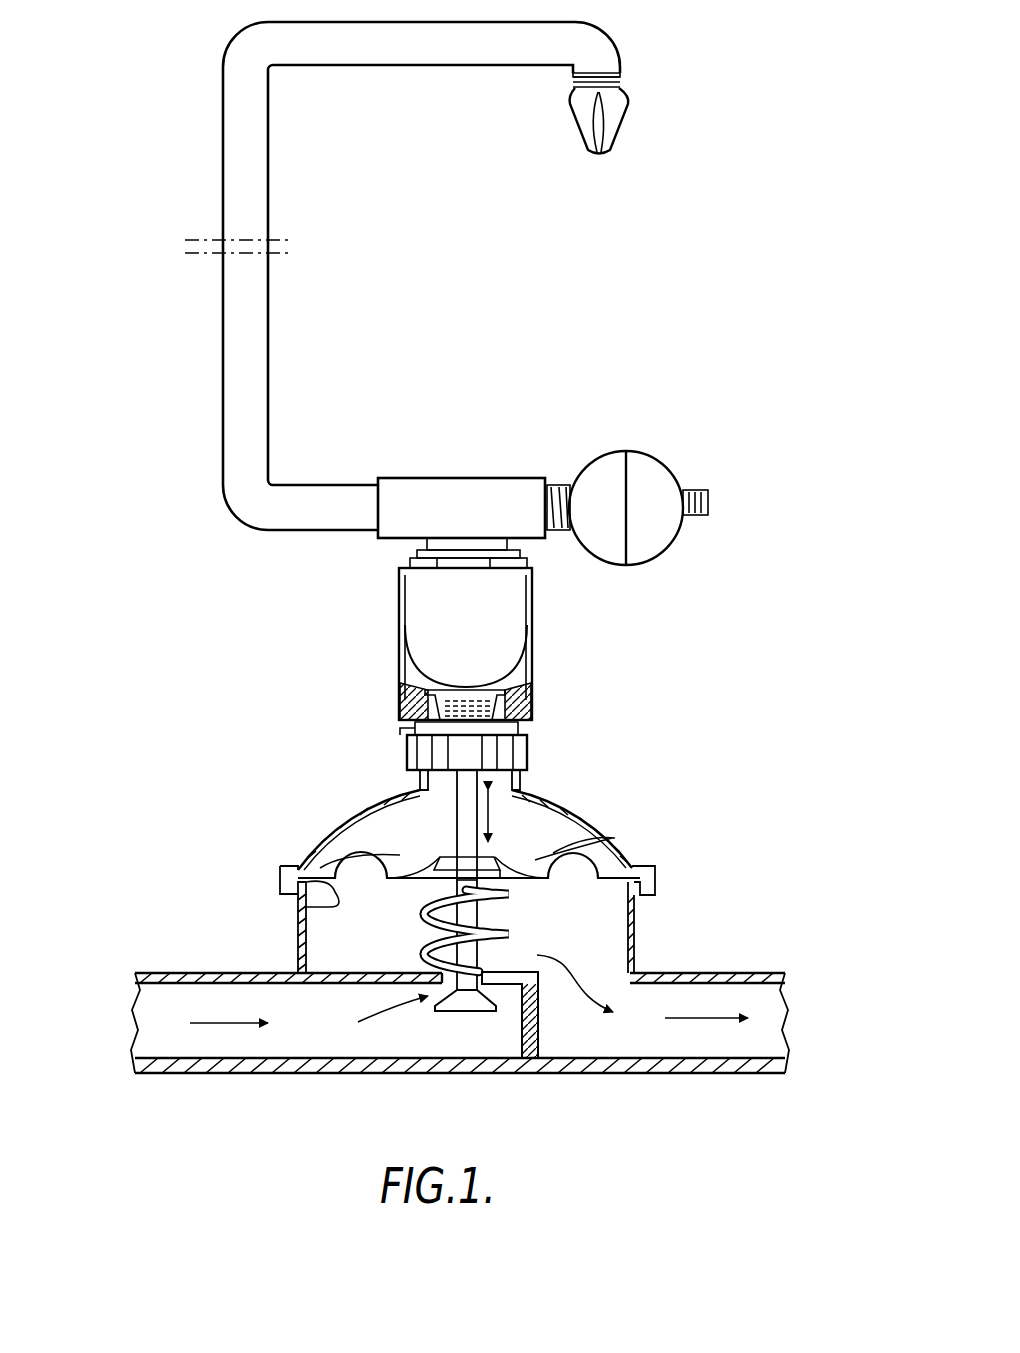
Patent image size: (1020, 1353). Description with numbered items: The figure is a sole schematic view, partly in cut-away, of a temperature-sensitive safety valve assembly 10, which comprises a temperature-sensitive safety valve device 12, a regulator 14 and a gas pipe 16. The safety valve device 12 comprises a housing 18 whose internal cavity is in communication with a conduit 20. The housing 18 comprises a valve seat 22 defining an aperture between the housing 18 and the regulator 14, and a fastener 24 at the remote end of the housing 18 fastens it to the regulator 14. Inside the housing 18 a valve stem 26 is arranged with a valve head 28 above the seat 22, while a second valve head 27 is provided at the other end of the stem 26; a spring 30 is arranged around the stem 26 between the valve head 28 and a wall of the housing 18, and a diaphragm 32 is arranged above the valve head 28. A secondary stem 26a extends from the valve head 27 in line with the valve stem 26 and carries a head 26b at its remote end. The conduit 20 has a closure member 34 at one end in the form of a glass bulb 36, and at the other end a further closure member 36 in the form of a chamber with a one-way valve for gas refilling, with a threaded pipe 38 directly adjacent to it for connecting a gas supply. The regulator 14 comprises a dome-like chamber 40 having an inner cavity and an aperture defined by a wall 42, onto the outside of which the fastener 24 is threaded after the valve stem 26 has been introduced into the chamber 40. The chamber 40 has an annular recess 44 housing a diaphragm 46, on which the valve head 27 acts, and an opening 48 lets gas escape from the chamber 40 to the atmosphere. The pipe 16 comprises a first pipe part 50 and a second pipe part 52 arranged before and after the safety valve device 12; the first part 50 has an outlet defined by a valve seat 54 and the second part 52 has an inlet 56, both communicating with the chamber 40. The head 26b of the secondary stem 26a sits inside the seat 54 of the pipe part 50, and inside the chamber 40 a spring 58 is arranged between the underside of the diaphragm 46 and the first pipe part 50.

The temperature-sensitive safety valve assembly 10 is at (705, 262).
The temperature-sensitive safety valve device 12 is at (335, 556).
The regulator 14 is at (300, 862).
The gas pipe 16 is at (281, 1076).
The housing 18 is at (532, 607).
The conduit 20 is at (223, 158).
The valve seat 22 is at (520, 680).
The fastener 24 is at (407, 763).
The valve stem 26 is at (456, 815).
The secondary stem 26a is at (490, 937).
The head 26b is at (457, 1012).
The second valve head 27 is at (342, 857).
The valve head 28 is at (405, 680).
The spring 30 is at (415, 732).
The diaphragm 32 is at (522, 662).
The closure member 34 is at (629, 130).
The glass bulb / closure member 36 is at (627, 95).
The threaded pipe 38 is at (690, 490).
The chamber 40 is at (312, 848).
The wall 42 is at (520, 778).
The annular recess 44 is at (298, 900).
The diaphragm 46 is at (640, 847).
The opening 48 is at (600, 806).
The first pipe part 50 is at (198, 973).
The second pipe part 52 is at (728, 973).
The valve seat 54 is at (520, 1012).
The inlet 56 is at (636, 958).
The spring 58 is at (440, 925).